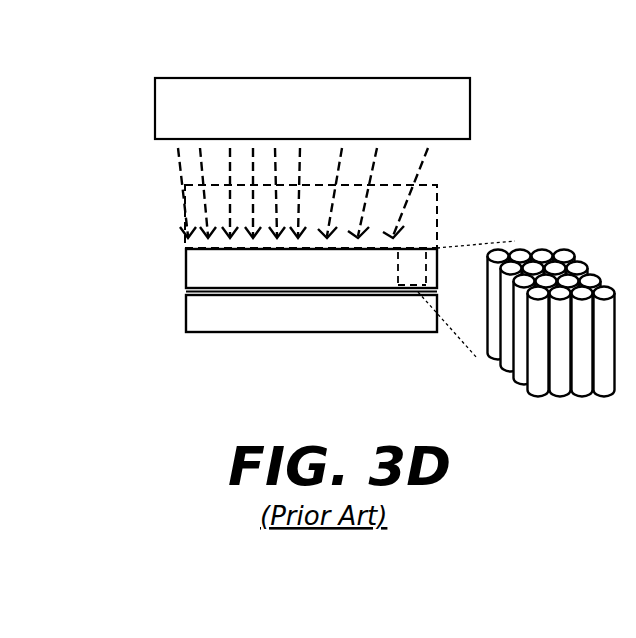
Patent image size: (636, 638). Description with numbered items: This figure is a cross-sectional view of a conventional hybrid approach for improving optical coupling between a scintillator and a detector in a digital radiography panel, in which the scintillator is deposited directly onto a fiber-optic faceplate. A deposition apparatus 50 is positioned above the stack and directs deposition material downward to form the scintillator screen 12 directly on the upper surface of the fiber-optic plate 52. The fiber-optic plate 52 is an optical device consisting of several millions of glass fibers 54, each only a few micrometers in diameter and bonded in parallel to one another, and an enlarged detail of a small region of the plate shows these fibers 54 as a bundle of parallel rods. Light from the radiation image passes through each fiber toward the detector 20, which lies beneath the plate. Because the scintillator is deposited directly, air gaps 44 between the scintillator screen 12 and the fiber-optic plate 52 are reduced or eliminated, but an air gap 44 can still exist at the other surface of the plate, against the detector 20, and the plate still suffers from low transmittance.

The deposition apparatus 50 is at (155, 86).
The scintillator screen 12 is at (185, 238).
The fiber-optic plate 52 is at (186, 271).
The air gap 44 is at (190, 291).
The detector 20 is at (270, 333).
The glass fibers 54 is at (550, 393).